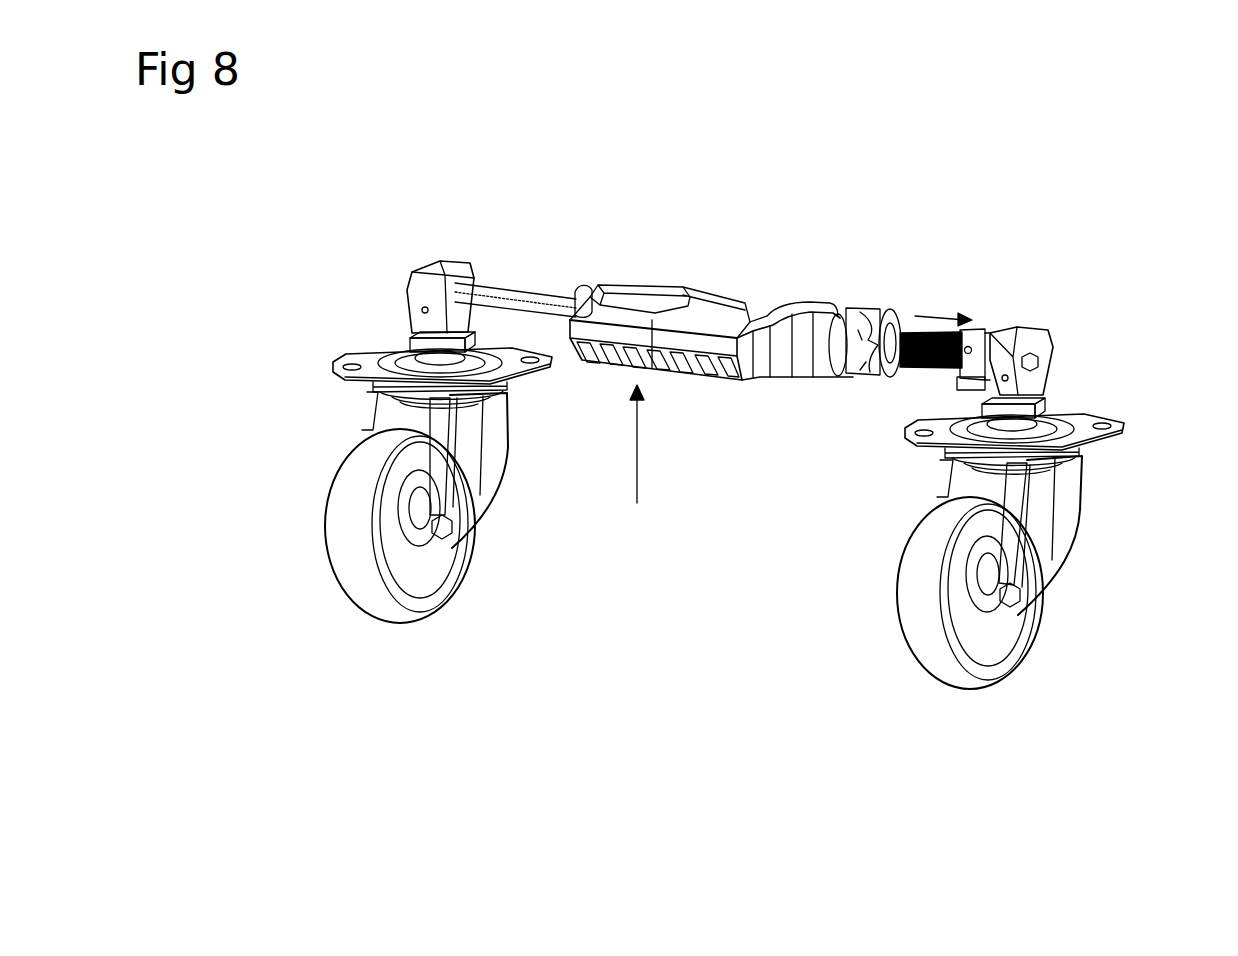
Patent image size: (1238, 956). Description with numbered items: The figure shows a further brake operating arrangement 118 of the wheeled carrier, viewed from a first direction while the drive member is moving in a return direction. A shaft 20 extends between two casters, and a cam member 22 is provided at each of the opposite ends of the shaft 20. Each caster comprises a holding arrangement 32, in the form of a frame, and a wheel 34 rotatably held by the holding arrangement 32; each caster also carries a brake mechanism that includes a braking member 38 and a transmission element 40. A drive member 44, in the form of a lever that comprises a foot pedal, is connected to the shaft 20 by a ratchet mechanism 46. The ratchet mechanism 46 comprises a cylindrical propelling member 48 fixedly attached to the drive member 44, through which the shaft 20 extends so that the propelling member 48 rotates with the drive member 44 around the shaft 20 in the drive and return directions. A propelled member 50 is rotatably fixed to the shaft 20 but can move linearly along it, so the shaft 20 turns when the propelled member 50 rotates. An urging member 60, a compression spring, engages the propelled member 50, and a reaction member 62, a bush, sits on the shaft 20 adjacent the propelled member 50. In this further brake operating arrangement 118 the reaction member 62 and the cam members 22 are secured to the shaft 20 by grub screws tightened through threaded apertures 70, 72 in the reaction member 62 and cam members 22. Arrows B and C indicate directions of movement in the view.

The shaft 20 is at (535, 283).
The cam member 22 is at (443, 262).
The holding arrangement 32 is at (477, 457).
The wheel 34 is at (345, 535).
The braking member 38 is at (418, 422).
The transmission element 40 is at (428, 343).
The drive member 44 is at (660, 287).
The ratchet mechanism 46 is at (886, 295).
The propelling member 48 is at (845, 348).
The propelled member 50 is at (900, 322).
The urging member 60 is at (938, 365).
The reaction member 62 is at (963, 365).
The threaded aperture 70 is at (976, 328).
The threaded aperture 72 is at (421, 311).
The further brake operating arrangement 118 is at (828, 362).
The direction arrow B is at (637, 430).
The direction arrow C is at (945, 313).